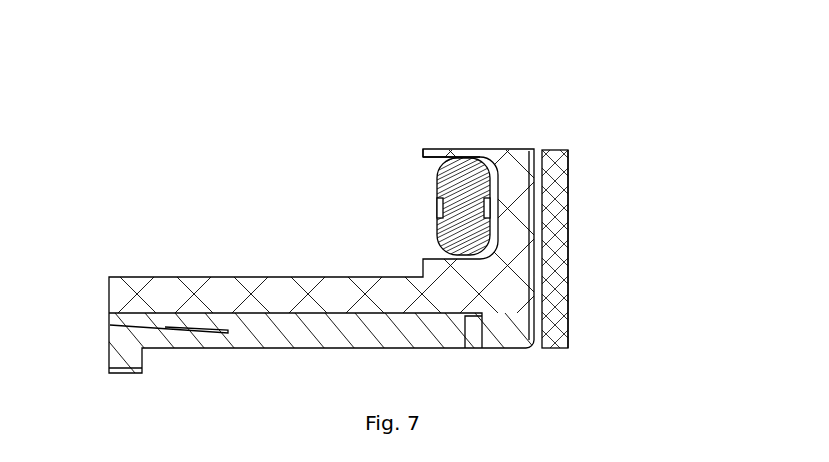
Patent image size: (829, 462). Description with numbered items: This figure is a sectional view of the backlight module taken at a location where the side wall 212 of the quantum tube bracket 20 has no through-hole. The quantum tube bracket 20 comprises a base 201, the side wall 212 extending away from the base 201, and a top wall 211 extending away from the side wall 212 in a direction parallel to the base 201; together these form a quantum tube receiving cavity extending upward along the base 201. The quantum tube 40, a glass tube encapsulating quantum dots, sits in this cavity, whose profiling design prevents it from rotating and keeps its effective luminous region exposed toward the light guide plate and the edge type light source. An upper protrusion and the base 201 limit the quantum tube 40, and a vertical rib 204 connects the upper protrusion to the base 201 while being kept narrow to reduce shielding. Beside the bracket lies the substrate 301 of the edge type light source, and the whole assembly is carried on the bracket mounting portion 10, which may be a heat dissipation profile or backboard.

The bracket mounting portion 10 is at (110, 324).
The quantum tube 40 is at (437, 183).
The top wall 211 is at (468, 150).
The quantum tube bracket 20 is at (485, 152).
The vertical rib 204 is at (568, 152).
The substrate 301 is at (568, 206).
The side wall 212 is at (512, 228).
The base 201 is at (450, 293).